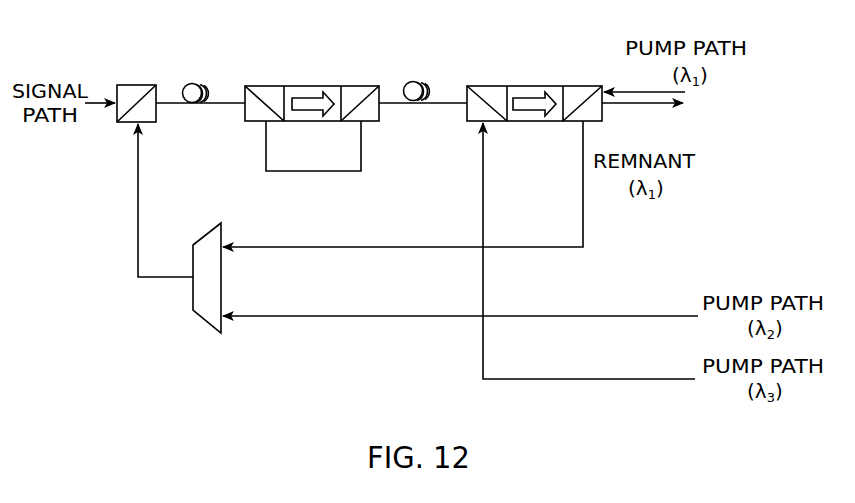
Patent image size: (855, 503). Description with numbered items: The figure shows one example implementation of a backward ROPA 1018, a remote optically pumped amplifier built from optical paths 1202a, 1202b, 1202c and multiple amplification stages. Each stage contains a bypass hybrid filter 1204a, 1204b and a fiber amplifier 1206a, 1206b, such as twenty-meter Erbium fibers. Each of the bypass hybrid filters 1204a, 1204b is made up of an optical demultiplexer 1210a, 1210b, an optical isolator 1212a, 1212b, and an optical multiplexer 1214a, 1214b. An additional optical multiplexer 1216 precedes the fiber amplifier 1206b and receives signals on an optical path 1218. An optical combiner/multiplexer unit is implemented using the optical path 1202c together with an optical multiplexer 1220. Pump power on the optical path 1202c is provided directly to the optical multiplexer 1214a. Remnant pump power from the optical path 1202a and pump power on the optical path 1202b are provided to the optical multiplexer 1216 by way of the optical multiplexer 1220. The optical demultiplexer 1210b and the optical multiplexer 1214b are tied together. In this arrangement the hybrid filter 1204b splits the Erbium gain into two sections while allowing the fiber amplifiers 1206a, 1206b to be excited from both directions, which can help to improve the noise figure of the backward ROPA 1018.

The backward ROPA 1018 is at (164, 392).
The optical path 1202a is at (675, 110).
The optical path 1202b is at (610, 311).
The optical path 1202c is at (605, 383).
The bypass hybrid filter 1204a is at (518, 50).
The bypass hybrid filter 1204b is at (298, 49).
The fiber amplifier 1206a is at (412, 79).
The fiber amplifier 1206b is at (200, 79).
The optical demultiplexer 1210a is at (597, 125).
The optical demultiplexer 1210b is at (383, 125).
The optical isolator 1212a is at (530, 124).
The optical isolator 1212b is at (305, 124).
The optical multiplexer 1214a is at (479, 83).
The optical multiplexer 1214b is at (256, 83).
The optical multiplexer 1216 is at (138, 79).
The optical path 1218 is at (102, 112).
The optical multiplexer 1220 is at (197, 315).